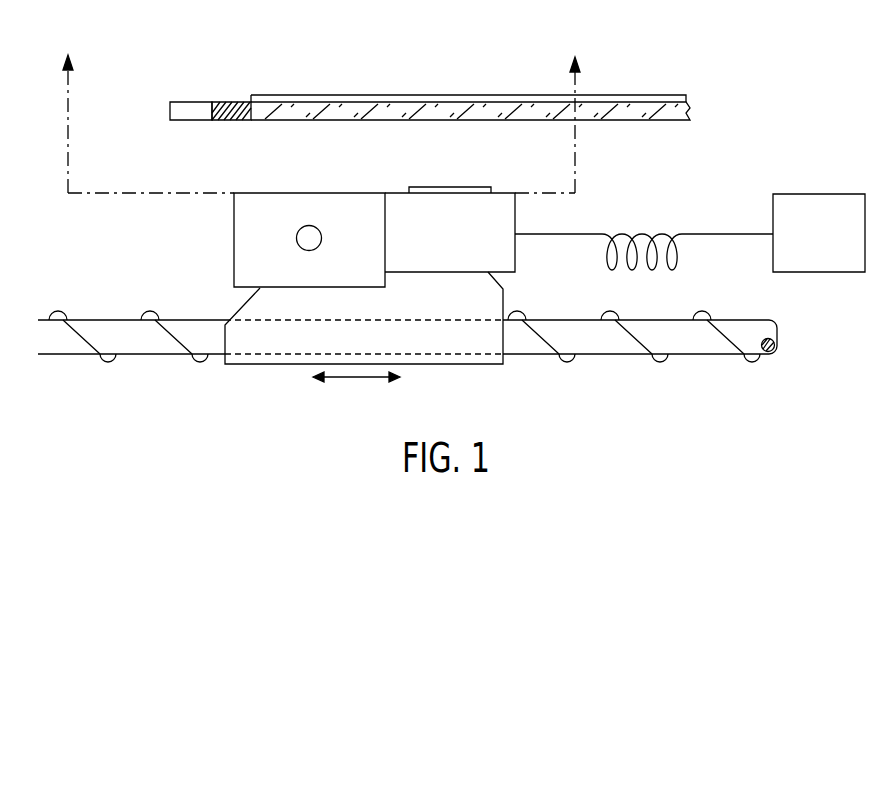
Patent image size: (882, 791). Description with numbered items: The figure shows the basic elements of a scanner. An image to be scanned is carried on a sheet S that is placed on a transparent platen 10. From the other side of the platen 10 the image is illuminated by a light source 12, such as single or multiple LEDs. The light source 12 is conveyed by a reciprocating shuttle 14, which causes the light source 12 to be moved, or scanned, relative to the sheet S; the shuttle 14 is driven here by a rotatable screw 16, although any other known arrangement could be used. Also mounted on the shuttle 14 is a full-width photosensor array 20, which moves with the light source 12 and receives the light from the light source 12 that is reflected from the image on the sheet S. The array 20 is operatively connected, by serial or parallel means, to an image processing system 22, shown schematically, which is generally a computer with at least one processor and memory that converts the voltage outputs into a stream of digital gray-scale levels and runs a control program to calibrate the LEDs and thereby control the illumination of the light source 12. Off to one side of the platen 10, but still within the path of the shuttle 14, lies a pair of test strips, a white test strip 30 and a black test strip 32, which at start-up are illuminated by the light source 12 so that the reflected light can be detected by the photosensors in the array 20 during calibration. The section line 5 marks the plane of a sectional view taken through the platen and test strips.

The section line 5- 5 is at (321, 110).
The white test strip 30 is at (188, 107).
The black test strip 32 is at (233, 102).
The sheet S is at (347, 95).
The transparent platen 10 is at (463, 108).
The light source 12 is at (309, 225).
The full-width photosensor array 20 is at (442, 187).
The reciprocating shuttle 14 is at (439, 347).
The rotatable screw 16 is at (595, 345).
The image processing system 22 is at (808, 245).